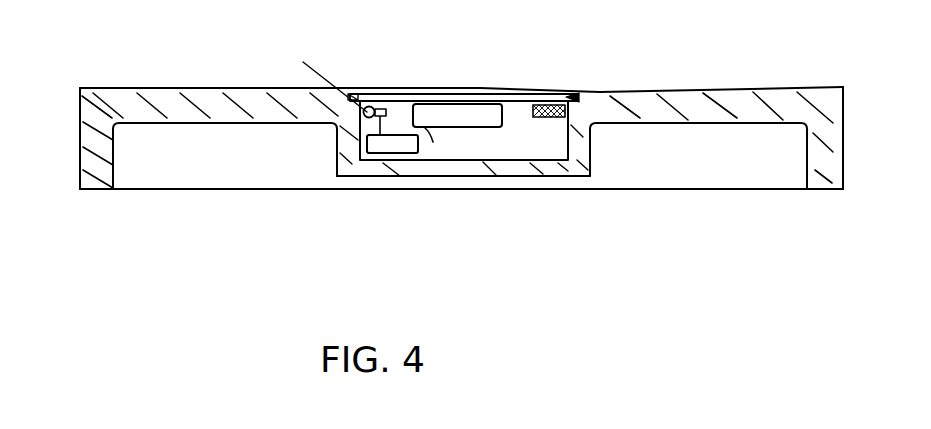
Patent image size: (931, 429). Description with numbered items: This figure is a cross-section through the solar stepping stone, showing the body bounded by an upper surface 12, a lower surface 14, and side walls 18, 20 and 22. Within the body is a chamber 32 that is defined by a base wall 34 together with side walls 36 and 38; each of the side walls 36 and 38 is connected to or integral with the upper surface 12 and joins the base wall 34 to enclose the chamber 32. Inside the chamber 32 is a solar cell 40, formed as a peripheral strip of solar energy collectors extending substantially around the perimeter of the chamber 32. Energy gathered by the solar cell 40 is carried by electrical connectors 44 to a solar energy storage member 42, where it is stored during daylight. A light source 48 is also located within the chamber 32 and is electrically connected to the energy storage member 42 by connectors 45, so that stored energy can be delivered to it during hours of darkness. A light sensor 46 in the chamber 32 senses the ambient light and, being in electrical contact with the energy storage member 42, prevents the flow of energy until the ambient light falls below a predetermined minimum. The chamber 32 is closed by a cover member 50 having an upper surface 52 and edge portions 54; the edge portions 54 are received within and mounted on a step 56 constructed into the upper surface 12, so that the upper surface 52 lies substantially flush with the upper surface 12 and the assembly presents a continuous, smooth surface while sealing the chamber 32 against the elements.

The upper surface 12 is at (192, 88).
The lower surface 14 is at (98, 191).
The side wall 18 is at (835, 147).
The side wall 20 is at (695, 174).
The side wall 22 is at (78, 158).
The chamber 32 is at (515, 147).
The base wall 34 is at (568, 172).
The side wall 36 is at (336, 160).
The side wall 38 is at (593, 150).
The solar cell 40 is at (548, 103).
The solar energy storage member 42 is at (373, 145).
The electrical connectors 44 is at (384, 116).
The connectors 45 is at (433, 142).
The light sensor 46 is at (364, 112).
The light source 48 is at (478, 108).
The cover member 50 is at (393, 92).
The upper surface 52 is at (425, 93).
The edge portion 54 is at (570, 100).
The step 56 is at (615, 65).